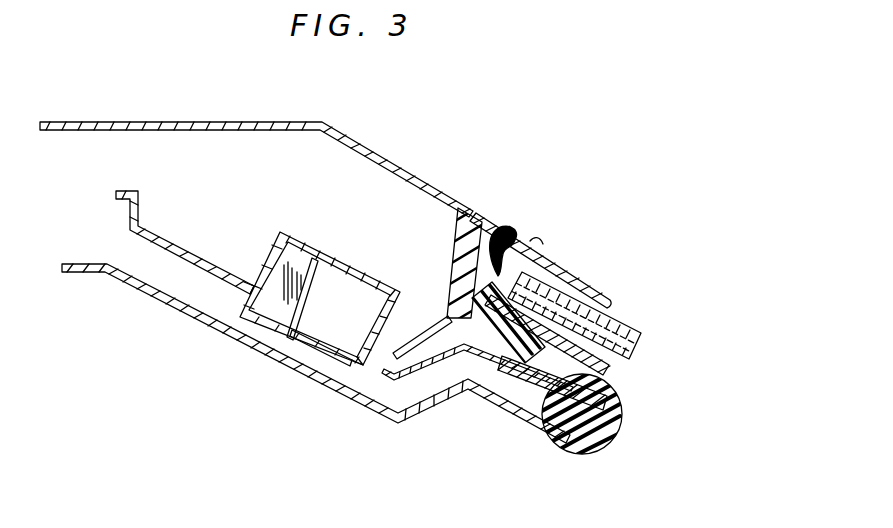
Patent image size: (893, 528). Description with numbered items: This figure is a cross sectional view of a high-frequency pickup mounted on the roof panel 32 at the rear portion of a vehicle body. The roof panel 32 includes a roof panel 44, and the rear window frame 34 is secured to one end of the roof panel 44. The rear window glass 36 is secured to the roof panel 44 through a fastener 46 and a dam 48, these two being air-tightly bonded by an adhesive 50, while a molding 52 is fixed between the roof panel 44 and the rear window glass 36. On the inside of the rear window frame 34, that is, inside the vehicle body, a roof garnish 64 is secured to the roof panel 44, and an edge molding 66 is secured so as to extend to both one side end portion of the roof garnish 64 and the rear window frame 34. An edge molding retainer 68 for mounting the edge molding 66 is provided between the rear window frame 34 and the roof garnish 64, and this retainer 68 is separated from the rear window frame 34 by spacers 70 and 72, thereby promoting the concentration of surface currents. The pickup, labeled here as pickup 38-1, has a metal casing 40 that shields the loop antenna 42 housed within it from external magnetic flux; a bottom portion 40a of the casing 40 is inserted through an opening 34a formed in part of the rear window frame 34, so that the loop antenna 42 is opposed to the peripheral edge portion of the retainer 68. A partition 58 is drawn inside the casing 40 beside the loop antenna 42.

The roof panel 32 is at (142, 119).
The rear window frame 34 is at (165, 234).
The opening 34a is at (247, 292).
The rear window glass 36 is at (614, 320).
The contact element 38-1 is at (306, 242).
The metal casing 40 is at (367, 277).
The bottom portion of contact body 40a is at (358, 368).
The loop antenna 42 is at (307, 341).
The roof panel 44 is at (371, 152).
The fastener 46 is at (537, 244).
The dam 48 is at (568, 350).
The adhesive 50 is at (487, 352).
The molding 52 is at (566, 263).
The partition wall 58 is at (318, 258).
The roof garnish 64 is at (157, 303).
The edge molding 66 is at (581, 446).
The edge molding retainer 68 is at (388, 382).
The spacer 70 is at (418, 375).
The spacer 72 is at (520, 398).